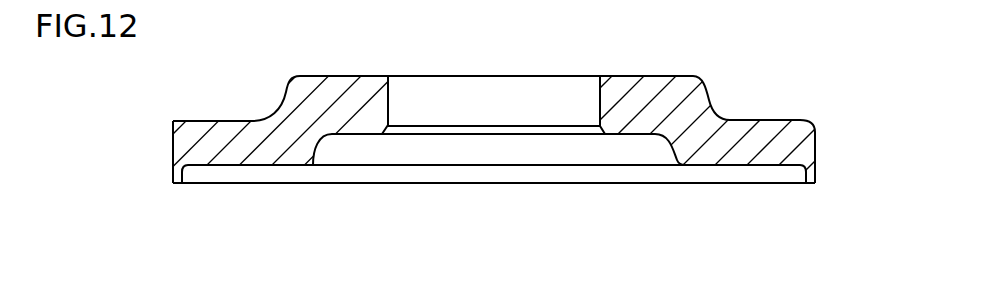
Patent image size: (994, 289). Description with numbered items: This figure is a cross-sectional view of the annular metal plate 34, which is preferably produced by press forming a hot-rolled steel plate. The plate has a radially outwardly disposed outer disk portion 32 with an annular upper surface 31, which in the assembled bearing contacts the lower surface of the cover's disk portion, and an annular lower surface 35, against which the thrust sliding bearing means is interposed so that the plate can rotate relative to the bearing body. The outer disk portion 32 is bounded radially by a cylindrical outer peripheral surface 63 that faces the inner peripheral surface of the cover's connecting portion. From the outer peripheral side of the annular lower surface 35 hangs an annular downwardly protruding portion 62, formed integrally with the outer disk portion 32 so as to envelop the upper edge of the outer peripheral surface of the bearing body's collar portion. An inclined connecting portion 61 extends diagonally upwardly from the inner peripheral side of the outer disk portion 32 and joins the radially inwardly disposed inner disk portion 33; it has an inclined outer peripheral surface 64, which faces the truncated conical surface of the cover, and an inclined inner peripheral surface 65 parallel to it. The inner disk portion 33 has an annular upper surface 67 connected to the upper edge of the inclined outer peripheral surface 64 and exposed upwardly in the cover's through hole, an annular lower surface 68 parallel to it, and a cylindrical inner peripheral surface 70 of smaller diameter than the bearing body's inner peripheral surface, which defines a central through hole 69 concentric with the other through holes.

The annular upper surface 31 is at (210, 121).
The outer disk portion 32 is at (238, 132).
The inner disk portion 33 is at (372, 90).
The annular metal plate 34 is at (170, 170).
The annular lower surface 35 is at (234, 166).
The inclined connecting portion 61 is at (292, 136).
The annular downwardly protruding portion 62 is at (180, 170).
The cylindrical outer peripheral surface 63 is at (173, 147).
The inclined outer peripheral surface 64 is at (283, 100).
The inclined inner peripheral surface 65 is at (322, 142).
The annular upper surface 67 is at (320, 75).
The annular lower surface 68 is at (358, 136).
The through hole 69 is at (488, 93).
The cylindrical inner peripheral surface 70 is at (390, 98).